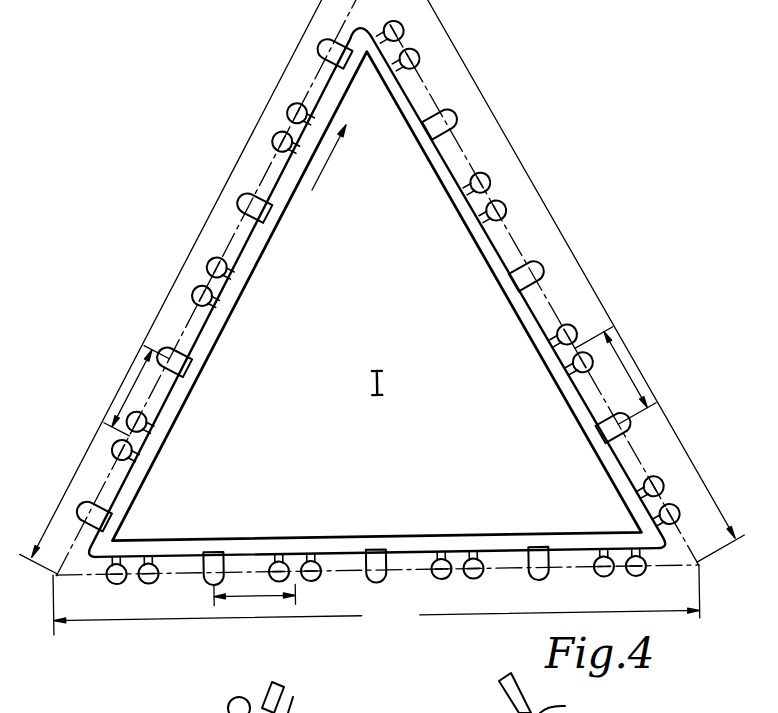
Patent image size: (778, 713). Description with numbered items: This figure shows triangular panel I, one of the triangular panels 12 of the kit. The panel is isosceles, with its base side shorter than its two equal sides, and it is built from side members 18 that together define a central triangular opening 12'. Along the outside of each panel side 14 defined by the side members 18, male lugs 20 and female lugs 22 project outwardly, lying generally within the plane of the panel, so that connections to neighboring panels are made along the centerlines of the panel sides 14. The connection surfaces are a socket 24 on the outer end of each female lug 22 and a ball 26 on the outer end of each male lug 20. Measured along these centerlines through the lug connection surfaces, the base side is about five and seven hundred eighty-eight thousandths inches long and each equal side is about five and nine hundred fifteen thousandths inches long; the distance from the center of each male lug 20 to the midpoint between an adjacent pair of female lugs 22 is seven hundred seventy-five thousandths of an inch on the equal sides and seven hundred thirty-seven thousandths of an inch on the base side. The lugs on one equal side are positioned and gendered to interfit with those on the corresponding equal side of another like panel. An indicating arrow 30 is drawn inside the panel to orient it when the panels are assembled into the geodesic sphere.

The triangular panel 12 is at (378, 318).
The central triangular opening 12' is at (373, 291).
The panel side 14 is at (260, 182).
The side member 18 is at (529, 325).
The male lug 20 is at (524, 285).
The female lug 22 is at (476, 200).
The socket 24 is at (533, 265).
The ball 26 is at (501, 202).
The indicating arrow 30 is at (329, 166).